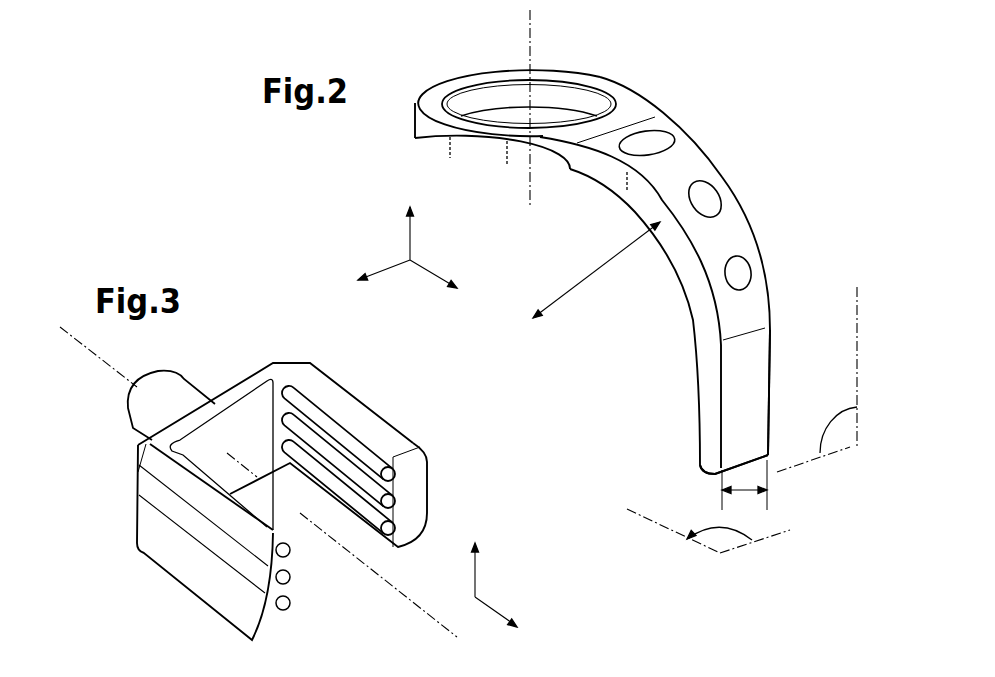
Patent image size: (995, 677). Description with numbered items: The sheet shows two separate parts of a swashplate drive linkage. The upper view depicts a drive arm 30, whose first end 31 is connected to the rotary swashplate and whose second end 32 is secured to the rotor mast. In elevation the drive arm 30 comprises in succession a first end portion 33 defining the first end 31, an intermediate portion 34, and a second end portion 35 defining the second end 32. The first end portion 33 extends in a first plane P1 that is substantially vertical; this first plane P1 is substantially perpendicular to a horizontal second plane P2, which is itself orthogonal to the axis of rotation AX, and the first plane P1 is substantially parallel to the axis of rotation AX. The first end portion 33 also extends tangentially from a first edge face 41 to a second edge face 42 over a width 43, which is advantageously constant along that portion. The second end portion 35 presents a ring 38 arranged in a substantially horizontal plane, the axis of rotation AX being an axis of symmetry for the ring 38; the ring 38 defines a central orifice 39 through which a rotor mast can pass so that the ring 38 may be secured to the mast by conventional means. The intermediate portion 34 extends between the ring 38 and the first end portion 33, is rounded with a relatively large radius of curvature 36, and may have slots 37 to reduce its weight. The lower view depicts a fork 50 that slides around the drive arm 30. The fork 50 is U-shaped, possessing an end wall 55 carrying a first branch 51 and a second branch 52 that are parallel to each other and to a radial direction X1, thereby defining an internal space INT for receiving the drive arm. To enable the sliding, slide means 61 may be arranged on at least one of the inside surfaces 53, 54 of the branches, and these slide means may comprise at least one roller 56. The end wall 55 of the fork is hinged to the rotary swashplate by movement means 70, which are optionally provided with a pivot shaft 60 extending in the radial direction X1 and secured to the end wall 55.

In FIG. 2, the drive arm 30 is at (585, 311).
In FIG. 2, the first end 31 is at (684, 299).
In FIG. 2, the first end portion 33 is at (682, 385).
In FIG. 2, the second end 32 is at (457, 103).
In FIG. 2, the second end portion 35 is at (403, 128).
In FIG. 2, the intermediate portion 34 is at (664, 252).
In FIG. 2, the radius of curvature 36 is at (596, 270).
In FIG. 2, the slots 37 is at (652, 143).
In FIG. 2, the ring 38 is at (433, 94).
In FIG. 2, the central orifice 39 is at (510, 100).
In FIG. 2, the first edge face 41 is at (710, 436).
In FIG. 2, the second edge face 42 is at (767, 423).
In FIG. 2, the width 43 is at (744, 492).
In FIG. 2, the axis of rotation AX is at (530, 42).
In FIG. 2, the first plane P1 is at (850, 452).
In FIG. 2, the second plane P2 is at (720, 550).
In FIG. 3, the fork 50 is at (121, 577).
In FIG. 3, the first branch 51 is at (250, 597).
In FIG. 3, the second branch 52 is at (417, 465).
In FIG. 3, the inside surface 53 is at (293, 558).
In FIG. 3, the inside surface 54 is at (258, 499).
In FIG. 3, the end wall 55 is at (241, 392).
In FIG. 3, the roller 56 is at (395, 502).
In FIG. 3, the pivot shaft 60 is at (142, 400).
In FIG. 3, the slide means 61 is at (377, 538).
In FIG. 3, the movement means 70 is at (128, 428).
In FIG. 3, the internal space INT is at (258, 504).
In FIG. 3, the radial direction X1 is at (343, 531).